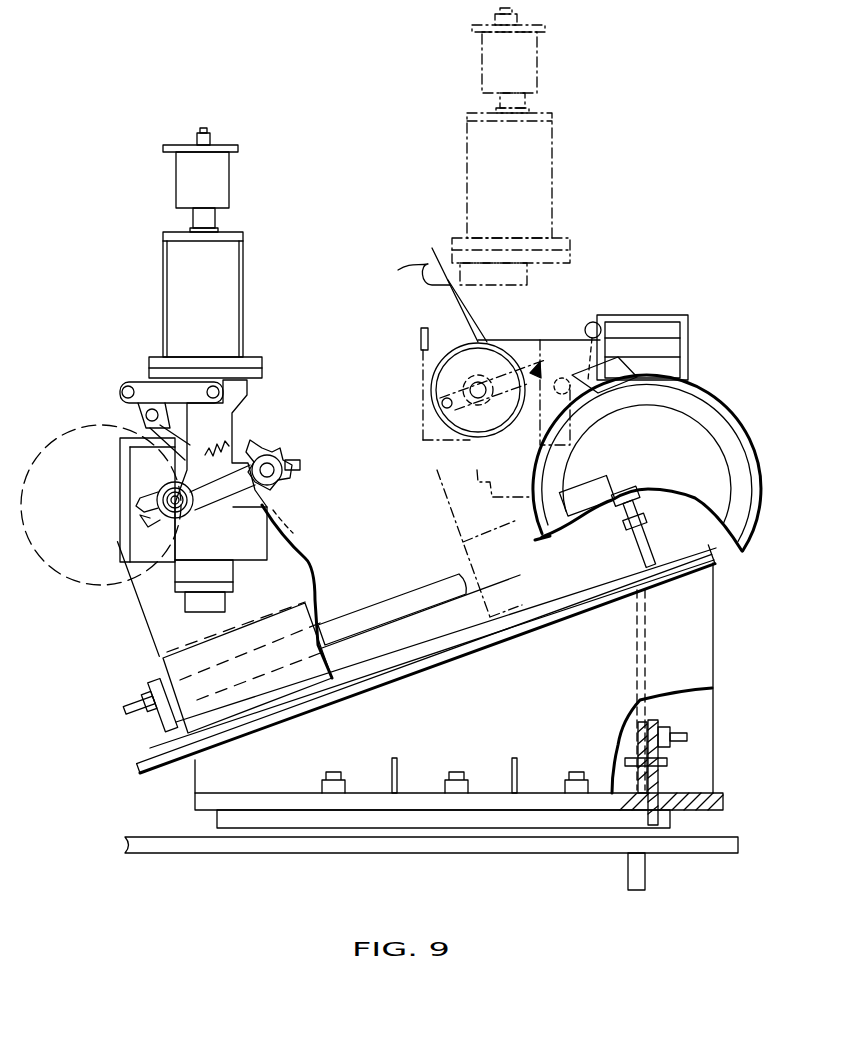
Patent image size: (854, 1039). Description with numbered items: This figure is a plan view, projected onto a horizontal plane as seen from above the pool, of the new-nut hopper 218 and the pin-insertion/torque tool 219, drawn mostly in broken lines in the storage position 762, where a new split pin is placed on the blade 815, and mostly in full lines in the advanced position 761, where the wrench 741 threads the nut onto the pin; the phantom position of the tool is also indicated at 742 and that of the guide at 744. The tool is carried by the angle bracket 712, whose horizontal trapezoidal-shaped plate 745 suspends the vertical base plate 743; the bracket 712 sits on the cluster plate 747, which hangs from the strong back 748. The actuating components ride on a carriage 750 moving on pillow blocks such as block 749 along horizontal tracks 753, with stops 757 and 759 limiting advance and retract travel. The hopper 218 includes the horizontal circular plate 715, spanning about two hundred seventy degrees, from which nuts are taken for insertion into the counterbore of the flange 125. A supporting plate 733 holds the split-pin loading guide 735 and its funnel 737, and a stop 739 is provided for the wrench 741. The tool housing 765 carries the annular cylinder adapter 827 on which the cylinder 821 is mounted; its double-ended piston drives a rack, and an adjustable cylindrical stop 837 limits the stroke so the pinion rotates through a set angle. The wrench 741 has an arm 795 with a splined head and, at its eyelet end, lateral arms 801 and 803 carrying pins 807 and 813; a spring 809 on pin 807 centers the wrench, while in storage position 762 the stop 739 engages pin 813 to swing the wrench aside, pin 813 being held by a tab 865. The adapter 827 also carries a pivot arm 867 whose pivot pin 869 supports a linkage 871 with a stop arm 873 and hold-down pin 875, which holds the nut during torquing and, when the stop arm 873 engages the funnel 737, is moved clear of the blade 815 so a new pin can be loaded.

The flange 125 is at (48, 445).
The new-nut hopper 218 is at (769, 419).
The pin-insertion/torque tool 219 is at (106, 709).
The angle bracket 712 is at (712, 657).
The horizontal circular plate 715 is at (685, 450).
The supporting plate 733 is at (645, 332).
The split-pin loading guide 735 is at (440, 345).
The funnel 737 is at (438, 383).
The stop 739 is at (622, 368).
The wrench 741 is at (265, 537).
The actuator position 742 is at (84, 619).
The vertical base plate 743 is at (140, 768).
The guide position 744 is at (716, 290).
The horizontal trapezoidal-shaped plate 745 is at (695, 617).
The cluster plate 747 is at (340, 818).
The strong back 748 is at (155, 852).
The pillow block 749 is at (217, 712).
The carriage 750 is at (305, 593).
The tracks 753 is at (412, 600).
The stop 757 is at (628, 500).
The stop 759 is at (148, 690).
The advanced position 761 is at (292, 297).
The storage position 762 is at (614, 170).
The housing 765 is at (228, 578).
The arm 795 is at (222, 500).
The arm 801 is at (268, 455).
The arm 803 is at (278, 490).
The pin 807 is at (262, 450).
The spring 809 is at (206, 455).
The pin 813 is at (275, 510).
The blade 815 is at (160, 500).
The cylinder 821 is at (177, 287).
The annular cylinder adapter 827 is at (255, 374).
The cylindrical stop 837 is at (220, 172).
The tab 865 is at (296, 470).
The pivot arm 867 is at (407, 268).
The pivot pin 869 is at (127, 379).
The linkage 871 is at (150, 440).
The stop arm 873 is at (165, 452).
The hold-down pin 875 is at (445, 400).